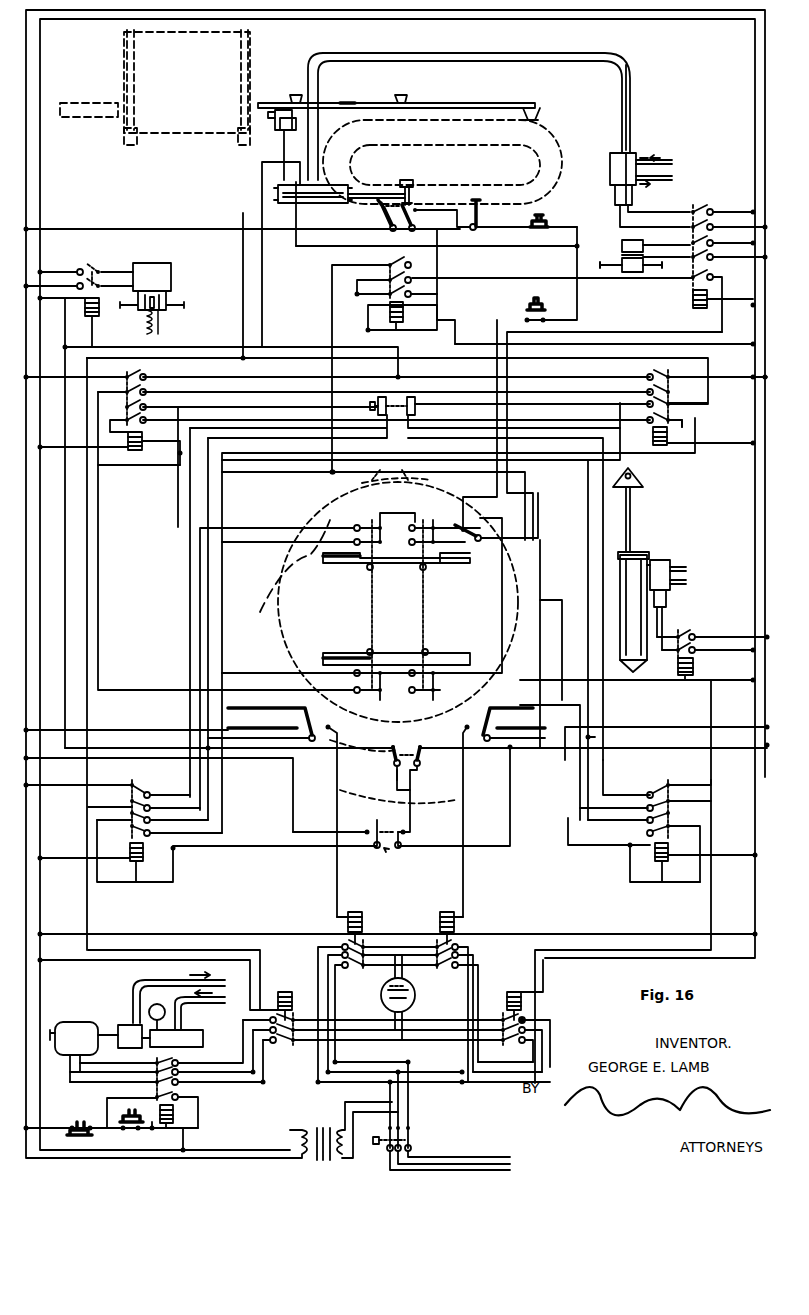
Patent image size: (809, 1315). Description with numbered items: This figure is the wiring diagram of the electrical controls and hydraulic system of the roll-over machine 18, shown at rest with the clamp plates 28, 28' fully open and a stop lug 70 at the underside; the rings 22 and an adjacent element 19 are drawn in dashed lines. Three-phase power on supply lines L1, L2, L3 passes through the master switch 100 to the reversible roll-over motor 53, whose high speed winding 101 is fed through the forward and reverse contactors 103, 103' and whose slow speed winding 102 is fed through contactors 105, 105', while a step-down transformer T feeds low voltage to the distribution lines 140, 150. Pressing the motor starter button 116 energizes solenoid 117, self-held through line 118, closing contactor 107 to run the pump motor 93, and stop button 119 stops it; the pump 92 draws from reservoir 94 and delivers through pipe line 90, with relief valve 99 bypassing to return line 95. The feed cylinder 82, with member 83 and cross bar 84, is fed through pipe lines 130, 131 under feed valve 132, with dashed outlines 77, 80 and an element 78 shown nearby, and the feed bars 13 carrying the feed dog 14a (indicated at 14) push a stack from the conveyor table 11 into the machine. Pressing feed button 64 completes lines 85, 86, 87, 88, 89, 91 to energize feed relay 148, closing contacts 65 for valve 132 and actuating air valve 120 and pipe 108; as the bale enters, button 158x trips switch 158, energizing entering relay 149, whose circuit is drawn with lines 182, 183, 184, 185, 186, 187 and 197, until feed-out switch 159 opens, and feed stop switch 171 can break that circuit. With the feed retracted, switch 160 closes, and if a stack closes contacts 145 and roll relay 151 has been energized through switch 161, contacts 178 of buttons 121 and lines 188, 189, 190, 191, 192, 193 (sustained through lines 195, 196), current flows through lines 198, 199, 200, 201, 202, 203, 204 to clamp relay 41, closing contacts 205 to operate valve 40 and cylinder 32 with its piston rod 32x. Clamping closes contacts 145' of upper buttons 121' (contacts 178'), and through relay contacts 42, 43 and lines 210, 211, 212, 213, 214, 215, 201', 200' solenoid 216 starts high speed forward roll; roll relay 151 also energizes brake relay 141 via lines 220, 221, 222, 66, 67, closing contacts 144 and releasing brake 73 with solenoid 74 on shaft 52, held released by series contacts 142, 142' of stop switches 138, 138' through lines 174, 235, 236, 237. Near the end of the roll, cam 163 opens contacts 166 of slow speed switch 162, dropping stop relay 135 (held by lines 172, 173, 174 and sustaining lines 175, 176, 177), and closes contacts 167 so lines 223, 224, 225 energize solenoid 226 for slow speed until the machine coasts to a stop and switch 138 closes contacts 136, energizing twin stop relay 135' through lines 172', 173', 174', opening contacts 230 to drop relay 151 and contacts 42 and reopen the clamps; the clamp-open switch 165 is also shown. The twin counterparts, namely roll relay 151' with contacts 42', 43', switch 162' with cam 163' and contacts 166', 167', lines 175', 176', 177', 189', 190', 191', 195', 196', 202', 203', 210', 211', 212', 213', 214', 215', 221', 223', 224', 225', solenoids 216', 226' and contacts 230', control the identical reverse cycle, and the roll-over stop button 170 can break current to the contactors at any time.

The work holder 11 is at (350, 103).
The plate 13 is at (447, 103).
The stop 14 is at (402, 96).
The stop 14a is at (300, 95).
The rotary table 18 is at (196, 90).
The feed slide 19 is at (75, 103).
The guide posts 22 is at (127, 45).
The contact plate 28 is at (316, 643).
The contact plate 28' is at (385, 569).
The cylinder 32 is at (628, 565).
The piston rod 32x is at (630, 518).
The valve 40 is at (662, 562).
The solenoid 41 is at (678, 678).
The switch contact 42 is at (677, 405).
The switch contact 42' is at (141, 412).
The switch contact 43 is at (672, 397).
The switch contact 43' is at (135, 397).
The clamp 52 is at (172, 305).
The electron tube 53 is at (380, 1008).
The push button 64 is at (528, 302).
The switch 65 is at (712, 219).
The conductor 66 is at (65, 330).
The conductor 67 is at (60, 296).
The cam 70 is at (405, 485).
The spring 73 is at (168, 320).
The relay 74 is at (145, 268).
The track 77 is at (560, 150).
The stop 78 is at (528, 112).
The track 80 is at (478, 145).
The slide 82 is at (313, 190).
The rod 83 is at (360, 196).
The head 84 is at (408, 180).
The conductor 85 is at (742, 310).
The conductor 86 is at (636, 332).
The conductor 87 is at (497, 332).
The conductor 88 is at (577, 292).
The switch 89 is at (497, 227).
The pressure line 90 is at (672, 162).
The conductor 91 is at (176, 229).
The pump 92 is at (120, 1025).
The motor 93 is at (72, 1022).
The reservoir 94 is at (203, 1040).
The return line 95 is at (672, 182).
The pressure gauge 99 is at (168, 1008).
The main switch 100 is at (420, 1134).
The tube element 101 is at (412, 1012).
The tube element 102 is at (412, 1004).
The switch 103 is at (433, 1049).
The switch 103' is at (373, 1036).
The switch 105 is at (420, 1007).
The switch 105' is at (348, 1007).
The switch 107 is at (168, 1064).
The valve 108 is at (600, 265).
The start button 116 is at (140, 1120).
The relay coil 117 is at (162, 1125).
The conductor 118 is at (198, 1112).
The stop button 119 is at (78, 1122).
The valve 120 is at (622, 245).
The contact 121 is at (407, 641).
The contact 121' is at (403, 582).
The conduit 130 is at (615, 78).
The conduit 131 is at (630, 98).
The cylinder 132 is at (610, 166).
The relay coil 135 is at (693, 863).
The relay coil 135' is at (136, 851).
The contact 136 is at (425, 738).
The contact 138 is at (399, 859).
The contact 138' is at (426, 778).
The power conductor 140 is at (40, 153).
The relay coil 141 is at (87, 316).
The switch 142 is at (417, 835).
The switch 142' is at (393, 755).
The switch 144 is at (98, 260).
The switch 145 is at (392, 695).
The switch 145' is at (409, 593).
The relay coil 148 is at (697, 310).
The relay coil 149 is at (405, 312).
The power conductor 150 is at (27, 190).
The relay coil 151 is at (688, 435).
The relay coil 151' is at (110, 448).
The latch 158 is at (300, 127).
The latch lever 158x is at (272, 103).
The switch arm 159 is at (485, 205).
The switch 160 is at (385, 222).
The switch 161 is at (420, 212).
The contact bar 162 is at (514, 731).
The contact bar 162' is at (261, 731).
The cam follower 163 is at (407, 640).
The cam follower 163' is at (373, 725).
The switch 165 is at (468, 528).
The contact bar 166 is at (508, 717).
The contact bar 166' is at (270, 720).
The pivot 167 is at (344, 821).
The pivot 167' is at (455, 821).
The contact 170 is at (375, 406).
The push button 171 is at (545, 220).
The conductor 172 is at (729, 871).
The conductor 172' is at (84, 871).
The conductor 173 is at (581, 853).
The conductor 173' is at (250, 863).
The conductor 174 is at (635, 756).
The conductor 174' is at (244, 753).
The conductor 175 is at (643, 893).
The conductor 175' is at (155, 898).
The conductor 176 is at (585, 763).
The conductor 176' is at (235, 803).
The conductor 177 is at (667, 735).
The conductor 177' is at (126, 719).
The contact plate 178 is at (398, 628).
The contact plate 178' is at (435, 576).
The conductor 182 is at (730, 344).
The conductor 183 is at (262, 162).
The conductor 184 is at (270, 185).
The conductor 185 is at (294, 246).
The conductor 186 is at (538, 278).
The conductor 187 is at (300, 298).
The conductor 188 is at (53, 450).
The conductor 189 is at (727, 487).
The conductor 189' is at (113, 487).
The conductor 190 is at (618, 765).
The conductor 190' is at (170, 769).
The conductor 191 is at (362, 595).
The conductor 191' is at (488, 564).
The conductor 192 is at (336, 452).
The conductor 193 is at (440, 250).
The conductor 195 is at (385, 507).
The conductor 195' is at (253, 408).
The conductor 196 is at (78, 775).
The conductor 196' is at (690, 765).
The conductor 197 is at (414, 340).
The conductor 198 is at (731, 682).
The conductor 199 is at (648, 682).
The conductor 200 is at (551, 650).
The conductor 200' is at (559, 644).
The conductor 201 is at (226, 612).
The conductor 201' is at (247, 657).
The conductor 202 is at (337, 505).
The conductor 202' is at (260, 464).
The conductor 203 is at (726, 400).
The conductor 203' is at (186, 368).
The conductor 204 is at (243, 335).
The switch 205 is at (697, 632).
The conductor 210 is at (585, 975).
The conductor 210' is at (149, 984).
The conductor 211 is at (598, 881).
The conductor 211' is at (195, 978).
The switch 212 is at (614, 821).
The switch 212' is at (145, 654).
The conductor 213 is at (578, 640).
The conductor 213' is at (228, 685).
The contact 214 is at (528, 576).
The conductor 214' is at (412, 411).
The conductor 215 is at (722, 416).
The conductor 215' is at (124, 428).
The relay coil 216 is at (515, 991).
The relay coil 216' is at (287, 993).
The conductor 220 is at (56, 380).
The conductor 221 is at (396, 376).
The conductor 221' is at (393, 367).
The conductor 222 is at (400, 370).
The conductor 223 is at (678, 920).
The conductor 223' is at (398, 920).
The conductor 224 is at (484, 905).
The conductor 224' is at (315, 907).
The conductor 225 is at (471, 795).
The conductor 225' is at (183, 794).
The relay coil 226 is at (440, 912).
The relay coil 226' is at (369, 912).
The switch 230 is at (155, 808).
The switch 230' is at (679, 831).
The conductor 235 is at (510, 850).
The switch arm 236 is at (400, 790).
The conductor 237 is at (170, 748).
The transformer T is at (320, 1130).
The supply line L1 is at (438, 1157).
The supply line L2 is at (475, 1164).
The supply line L3 is at (508, 1170).